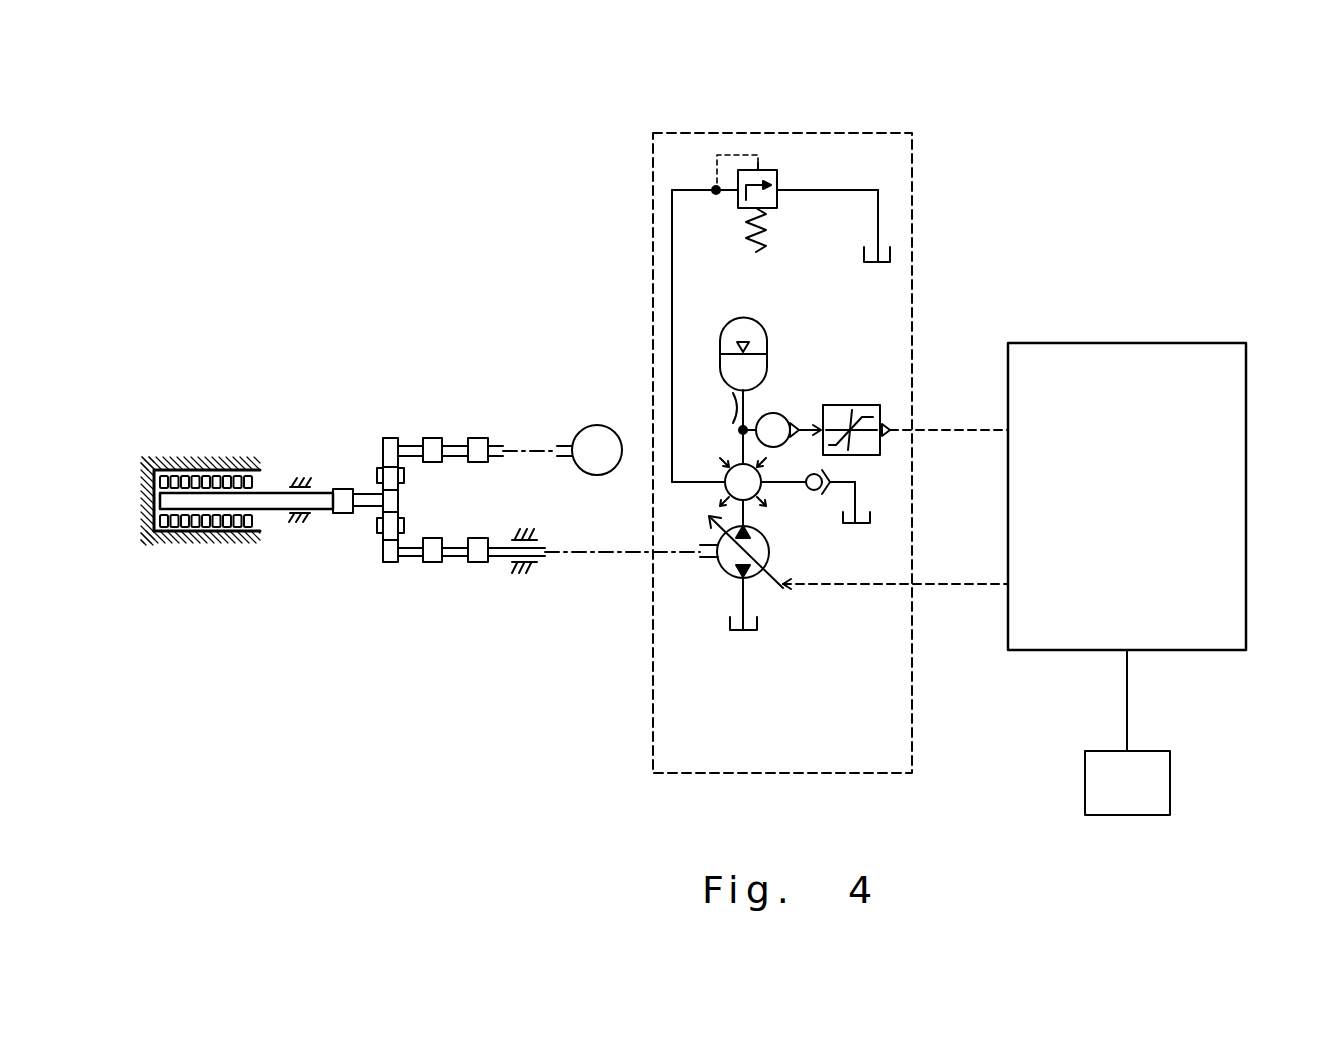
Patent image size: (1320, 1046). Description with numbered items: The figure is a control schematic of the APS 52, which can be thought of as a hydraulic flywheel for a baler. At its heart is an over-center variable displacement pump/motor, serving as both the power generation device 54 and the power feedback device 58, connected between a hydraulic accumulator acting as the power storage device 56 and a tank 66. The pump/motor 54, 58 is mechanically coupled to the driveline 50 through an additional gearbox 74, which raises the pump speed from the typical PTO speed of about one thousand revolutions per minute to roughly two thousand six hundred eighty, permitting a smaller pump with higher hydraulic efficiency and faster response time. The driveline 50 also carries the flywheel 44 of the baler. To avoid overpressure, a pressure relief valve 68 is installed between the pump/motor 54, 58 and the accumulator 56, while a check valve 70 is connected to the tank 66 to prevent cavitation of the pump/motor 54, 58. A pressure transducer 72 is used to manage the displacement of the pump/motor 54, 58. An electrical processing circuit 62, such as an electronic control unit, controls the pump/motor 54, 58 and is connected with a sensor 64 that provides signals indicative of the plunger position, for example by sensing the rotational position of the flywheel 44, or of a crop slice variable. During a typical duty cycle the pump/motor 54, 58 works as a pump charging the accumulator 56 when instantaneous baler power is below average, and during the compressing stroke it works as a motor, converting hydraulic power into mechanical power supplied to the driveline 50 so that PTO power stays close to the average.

The flywheel 44 is at (198, 462).
The driveline 50 is at (312, 464).
The APS 52 is at (980, 163).
The power generation device 54 is at (858, 581).
The power storage device 56 is at (740, 317).
The power feedback device 58 is at (753, 576).
The electrical processing circuit 62 is at (1172, 343).
The sensor 64 is at (1170, 773).
The tank 66 is at (890, 255).
The pressure relief valve 68 is at (778, 178).
The check valve 70 is at (760, 490).
The pressure transducer 72 is at (777, 413).
The gearbox 74 is at (374, 555).